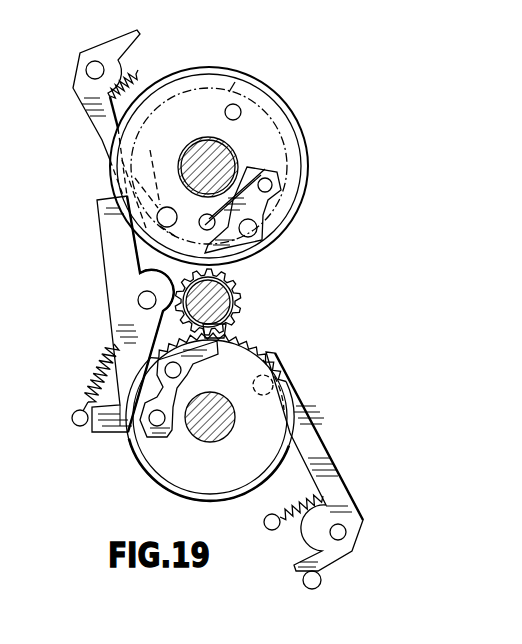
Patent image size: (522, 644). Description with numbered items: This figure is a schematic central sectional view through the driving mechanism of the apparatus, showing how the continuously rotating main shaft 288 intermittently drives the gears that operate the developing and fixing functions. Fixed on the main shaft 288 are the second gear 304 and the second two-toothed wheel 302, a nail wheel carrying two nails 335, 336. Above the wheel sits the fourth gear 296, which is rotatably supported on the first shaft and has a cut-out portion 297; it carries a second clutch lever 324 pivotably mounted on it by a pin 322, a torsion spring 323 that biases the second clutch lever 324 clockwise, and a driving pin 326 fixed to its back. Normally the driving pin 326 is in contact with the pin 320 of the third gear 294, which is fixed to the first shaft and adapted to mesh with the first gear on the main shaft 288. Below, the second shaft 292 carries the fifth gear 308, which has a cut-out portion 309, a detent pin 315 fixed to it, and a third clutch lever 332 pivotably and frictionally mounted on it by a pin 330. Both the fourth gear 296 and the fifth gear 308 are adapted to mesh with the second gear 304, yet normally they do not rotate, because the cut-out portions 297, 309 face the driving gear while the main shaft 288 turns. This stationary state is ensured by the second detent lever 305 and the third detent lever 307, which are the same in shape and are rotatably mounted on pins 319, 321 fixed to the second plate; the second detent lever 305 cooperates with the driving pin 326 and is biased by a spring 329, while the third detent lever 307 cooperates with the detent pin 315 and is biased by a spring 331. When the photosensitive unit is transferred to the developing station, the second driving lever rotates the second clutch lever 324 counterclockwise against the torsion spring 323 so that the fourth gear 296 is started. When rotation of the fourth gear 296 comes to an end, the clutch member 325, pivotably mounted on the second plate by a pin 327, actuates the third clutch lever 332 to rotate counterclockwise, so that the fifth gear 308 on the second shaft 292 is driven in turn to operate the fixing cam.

The main shaft 288 is at (226, 294).
The second shaft 292 is at (210, 420).
The third gear 294 is at (277, 115).
The fourth gear 296 is at (308, 160).
The cut-out portion 297 is at (136, 278).
The second two-toothed wheel 302 is at (240, 278).
The second gear 304 is at (238, 310).
The second detent lever 305 is at (95, 113).
The third detent lever 307 is at (308, 428).
The fifth gear 308 is at (276, 438).
The cut-out portion 309 is at (252, 330).
The detent pin 315 is at (253, 385).
The pin 319 is at (94, 63).
The pin 320 is at (225, 115).
The pin 321 is at (351, 541).
The pin 322 is at (258, 227).
The torsion spring 323 is at (222, 176).
The second clutch lever 324 is at (273, 191).
The clutch member 325 is at (115, 420).
The driving pin 326 is at (167, 207).
The pin 327 is at (138, 299).
The spring 329 is at (133, 75).
The pin 330 is at (183, 368).
The spring 331 is at (293, 522).
The third clutch lever 332 is at (156, 427).
The nail 335 is at (130, 260).
The nail 336 is at (230, 323).